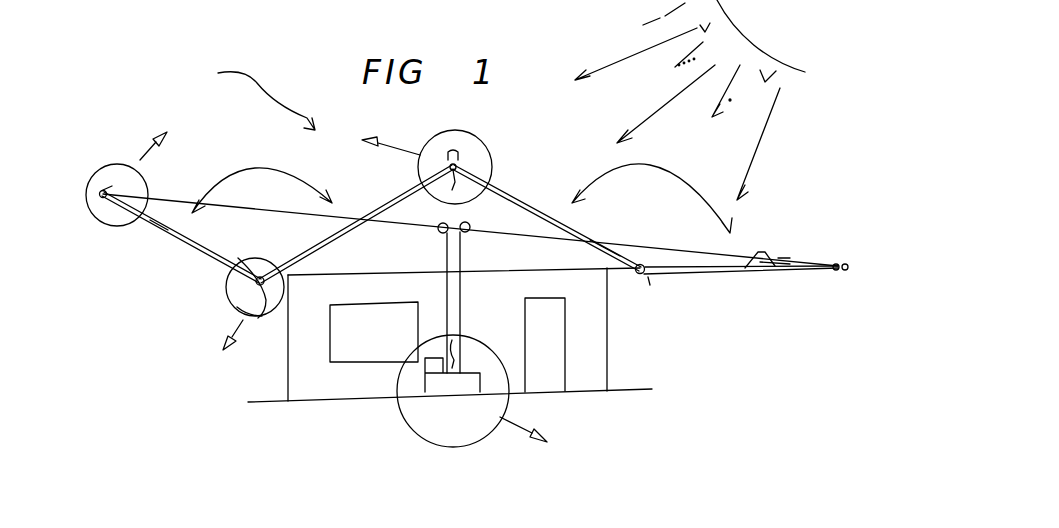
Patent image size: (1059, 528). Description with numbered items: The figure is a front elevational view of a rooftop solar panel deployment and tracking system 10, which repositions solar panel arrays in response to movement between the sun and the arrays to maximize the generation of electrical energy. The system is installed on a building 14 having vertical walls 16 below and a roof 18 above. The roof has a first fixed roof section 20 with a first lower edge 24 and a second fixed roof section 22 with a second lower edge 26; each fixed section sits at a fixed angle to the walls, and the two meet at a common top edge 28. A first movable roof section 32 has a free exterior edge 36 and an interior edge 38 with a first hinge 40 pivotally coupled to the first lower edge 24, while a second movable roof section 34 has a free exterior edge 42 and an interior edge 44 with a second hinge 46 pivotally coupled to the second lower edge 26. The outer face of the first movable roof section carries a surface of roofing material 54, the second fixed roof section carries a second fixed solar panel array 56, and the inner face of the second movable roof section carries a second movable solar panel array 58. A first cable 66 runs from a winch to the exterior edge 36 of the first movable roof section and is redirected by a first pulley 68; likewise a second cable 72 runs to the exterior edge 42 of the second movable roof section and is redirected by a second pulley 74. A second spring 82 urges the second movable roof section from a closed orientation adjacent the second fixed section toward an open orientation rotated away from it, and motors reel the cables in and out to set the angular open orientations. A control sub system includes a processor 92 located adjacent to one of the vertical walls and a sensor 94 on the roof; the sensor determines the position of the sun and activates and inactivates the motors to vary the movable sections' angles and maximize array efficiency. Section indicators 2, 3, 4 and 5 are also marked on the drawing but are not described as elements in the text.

The rooftop solar panel deployment and tracking system 10 is at (248, 93).
The section view arrow 2 is at (536, 439).
The section view arrow 3 is at (376, 135).
The section view arrow 4 is at (161, 130).
The section view arrow 5 is at (224, 352).
The building 14 is at (592, 348).
The vertical walls 16 is at (312, 385).
The roof 18 is at (503, 200).
The first fixed roof section 20 is at (325, 240).
The second fixed roof section 22 is at (567, 223).
The first lower edge 24 is at (263, 323).
The second lower edge 26 is at (643, 263).
The common top edge 28 is at (490, 145).
The first movable roof section 32 is at (175, 222).
The second movable roof section 34 is at (772, 263).
The free exterior edge 36 is at (103, 198).
The interior edge 38 is at (237, 306).
The first hinge 40 is at (243, 258).
The free exterior edge 42 is at (845, 262).
The interior edge 44 is at (648, 277).
The second hinge 46 is at (637, 275).
The roofing material 54 is at (148, 232).
The second fixed solar panel array 56 is at (570, 220).
The second movable solar panel array 58 is at (782, 258).
The first cable 66 is at (173, 202).
The first pulley 68 is at (440, 233).
The second cable 72 is at (703, 253).
The second pulley 74 is at (470, 232).
The second spring 82 is at (650, 266).
The processor 92 is at (427, 370).
The sensor 94 is at (455, 155).